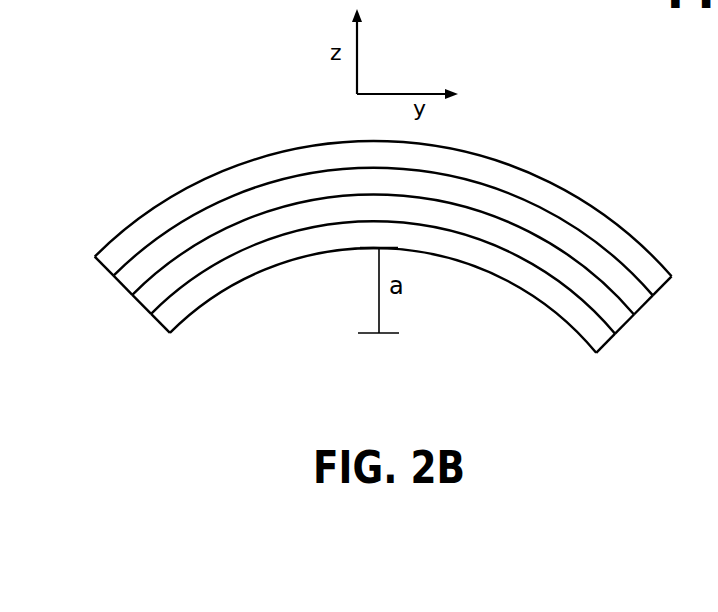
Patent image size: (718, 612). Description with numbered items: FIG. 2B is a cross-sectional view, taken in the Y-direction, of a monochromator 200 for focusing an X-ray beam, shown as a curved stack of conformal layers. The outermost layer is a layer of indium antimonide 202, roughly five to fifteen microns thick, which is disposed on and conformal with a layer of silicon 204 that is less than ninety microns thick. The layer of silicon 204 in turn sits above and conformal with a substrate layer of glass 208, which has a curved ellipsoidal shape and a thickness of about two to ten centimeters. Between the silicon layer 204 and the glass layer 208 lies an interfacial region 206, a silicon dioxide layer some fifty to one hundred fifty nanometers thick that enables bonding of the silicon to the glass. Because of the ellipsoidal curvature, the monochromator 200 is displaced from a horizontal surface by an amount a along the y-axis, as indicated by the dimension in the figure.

The monochromator 200 is at (578, 124).
The layer of indium antimonide (InSb) 202 is at (602, 340).
The layer of silicon 204 is at (617, 315).
The interfacial region 206 is at (637, 295).
The layer of glass 208 is at (635, 258).